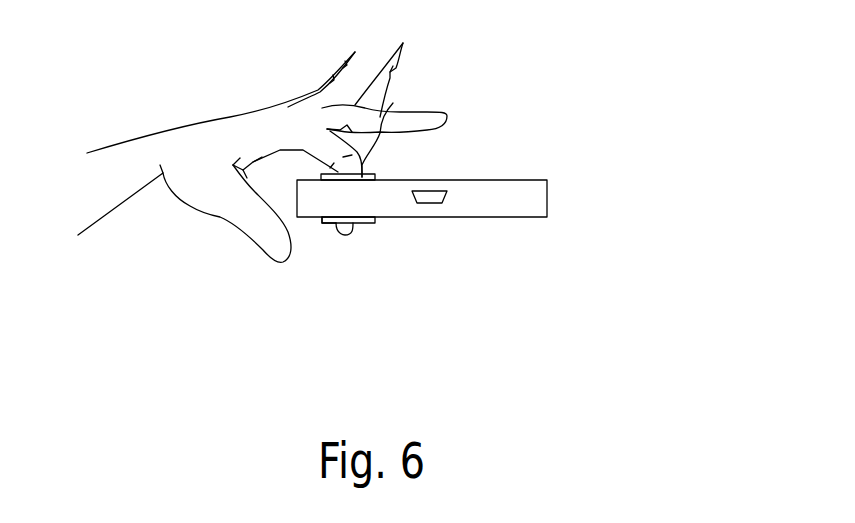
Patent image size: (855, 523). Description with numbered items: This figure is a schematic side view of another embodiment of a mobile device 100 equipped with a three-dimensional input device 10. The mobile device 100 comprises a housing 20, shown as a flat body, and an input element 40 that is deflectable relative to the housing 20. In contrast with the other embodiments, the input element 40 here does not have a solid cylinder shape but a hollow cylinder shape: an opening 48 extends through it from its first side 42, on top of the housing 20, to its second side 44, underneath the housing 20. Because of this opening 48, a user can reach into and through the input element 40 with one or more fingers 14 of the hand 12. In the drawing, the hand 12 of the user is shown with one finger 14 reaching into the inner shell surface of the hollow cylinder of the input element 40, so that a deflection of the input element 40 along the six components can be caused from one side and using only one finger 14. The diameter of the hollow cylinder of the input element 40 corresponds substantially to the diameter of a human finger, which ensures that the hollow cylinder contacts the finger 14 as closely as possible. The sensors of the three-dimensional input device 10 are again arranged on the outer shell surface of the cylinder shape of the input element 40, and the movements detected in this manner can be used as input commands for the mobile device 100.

The 3D input device 10 is at (347, 245).
The hand 12 is at (243, 125).
The finger 14 is at (393, 103).
The housing 20 is at (535, 200).
The input element 40 is at (325, 230).
The first side 42 is at (386, 172).
The second side 44 is at (377, 230).
The opening 48 is at (327, 230).
The mobile device 100 is at (523, 163).